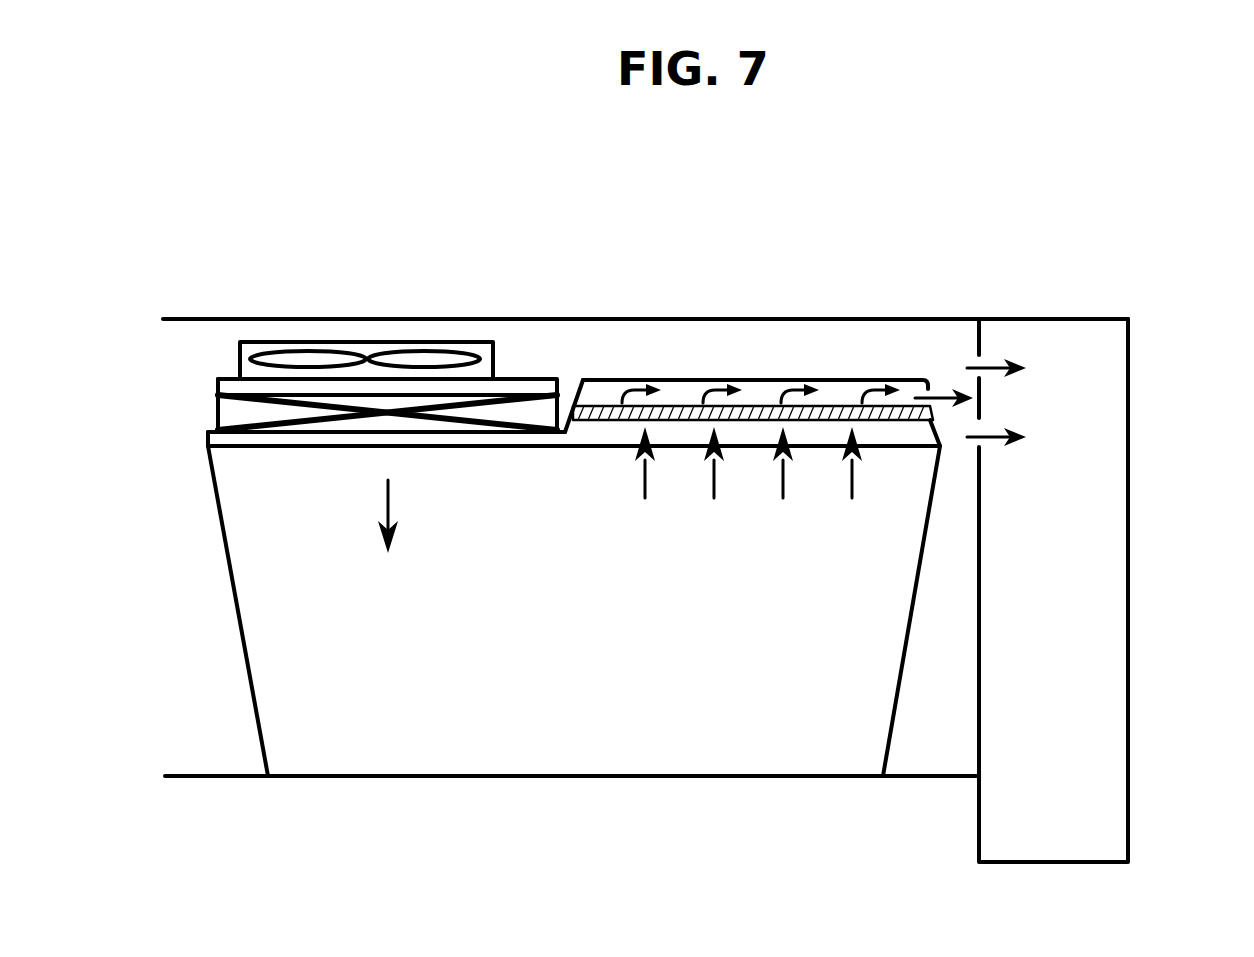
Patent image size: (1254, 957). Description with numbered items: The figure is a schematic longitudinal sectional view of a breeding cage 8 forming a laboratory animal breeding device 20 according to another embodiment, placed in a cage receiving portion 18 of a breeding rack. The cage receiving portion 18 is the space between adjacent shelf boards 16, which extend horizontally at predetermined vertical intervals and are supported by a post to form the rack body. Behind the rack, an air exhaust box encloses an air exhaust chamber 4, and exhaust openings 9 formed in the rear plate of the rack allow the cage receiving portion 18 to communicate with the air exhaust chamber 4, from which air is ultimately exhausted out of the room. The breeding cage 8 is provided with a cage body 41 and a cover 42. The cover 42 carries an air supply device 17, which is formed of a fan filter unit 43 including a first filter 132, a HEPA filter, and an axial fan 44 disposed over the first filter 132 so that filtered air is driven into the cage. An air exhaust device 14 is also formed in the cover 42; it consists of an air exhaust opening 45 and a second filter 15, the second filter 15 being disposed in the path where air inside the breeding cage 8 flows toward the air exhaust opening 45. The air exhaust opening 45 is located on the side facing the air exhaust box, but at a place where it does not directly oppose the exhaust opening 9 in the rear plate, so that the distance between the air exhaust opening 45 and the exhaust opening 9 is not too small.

The air exhaust chamber 4 is at (1128, 615).
The breeding cage 8 is at (232, 668).
The exhaust opening 9 is at (980, 378).
The air exhaust device 14 is at (724, 360).
The second filter 15 is at (672, 410).
The shelf board 16 is at (818, 318).
The air supply device 17 is at (325, 328).
The cage receiving portion 18 is at (565, 382).
The laboratory animal breeding device 20 is at (170, 292).
The cage body 41 is at (237, 598).
The cover 42 is at (848, 392).
The fan filter unit 43 is at (188, 343).
The axial fan 44 is at (428, 343).
The air exhaust opening 45 is at (933, 388).
The first filter 132 is at (233, 378).